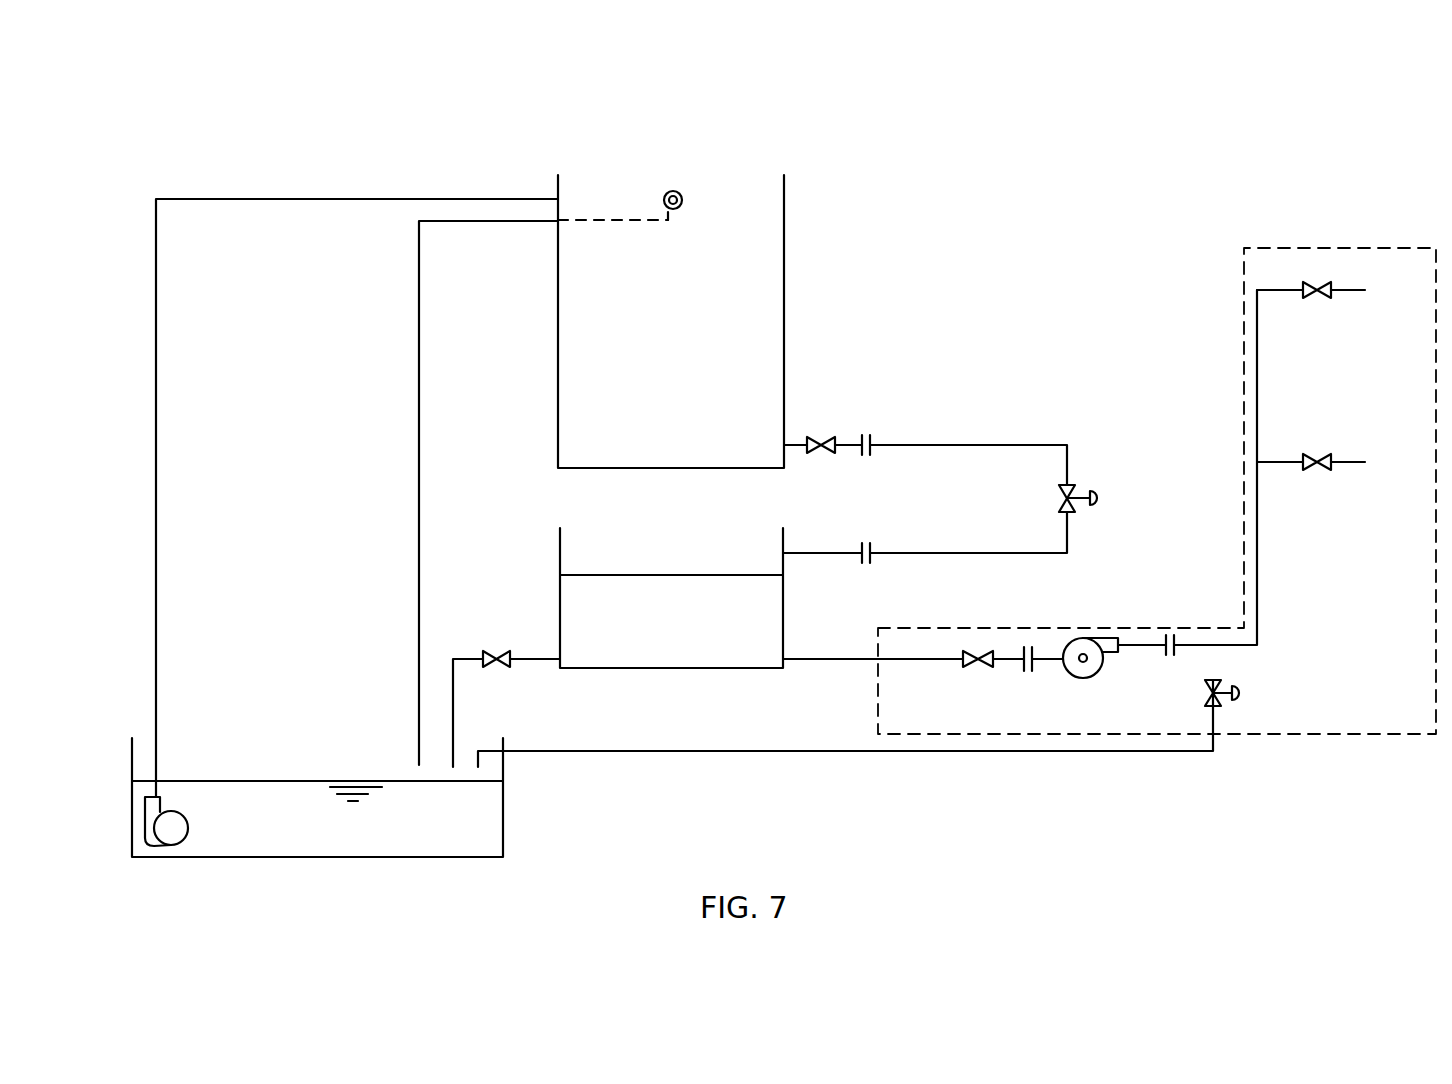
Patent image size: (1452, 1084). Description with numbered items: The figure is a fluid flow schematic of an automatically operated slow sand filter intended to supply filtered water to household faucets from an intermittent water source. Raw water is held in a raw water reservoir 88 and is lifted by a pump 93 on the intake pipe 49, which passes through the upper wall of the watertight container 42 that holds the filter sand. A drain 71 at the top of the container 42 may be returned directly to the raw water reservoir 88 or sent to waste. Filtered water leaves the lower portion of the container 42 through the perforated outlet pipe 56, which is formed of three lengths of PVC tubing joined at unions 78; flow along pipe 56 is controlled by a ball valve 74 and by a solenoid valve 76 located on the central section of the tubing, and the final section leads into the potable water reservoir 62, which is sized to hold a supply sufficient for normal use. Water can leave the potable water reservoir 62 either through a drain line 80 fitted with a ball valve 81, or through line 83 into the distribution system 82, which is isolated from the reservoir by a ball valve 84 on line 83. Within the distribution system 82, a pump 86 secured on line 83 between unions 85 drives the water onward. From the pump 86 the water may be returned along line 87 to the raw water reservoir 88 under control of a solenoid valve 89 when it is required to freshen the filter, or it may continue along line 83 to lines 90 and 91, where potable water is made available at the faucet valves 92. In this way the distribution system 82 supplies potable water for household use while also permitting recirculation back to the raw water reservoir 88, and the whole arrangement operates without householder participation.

The watertight container 42 is at (784, 290).
The pipe 49 is at (400, 197).
The perforated pipe 56 is at (792, 440).
The potable water reservoir 62 is at (784, 602).
The drain 71 is at (640, 222).
The ball valve 74 is at (820, 455).
The solenoid valve 76 is at (1075, 484).
The unions 78 is at (868, 436).
The drain line 80 is at (457, 657).
The ball valve 81 is at (497, 648).
The distribution system 82 is at (1155, 749).
The line 83 is at (1013, 664).
The ball valve 84 is at (965, 668).
The unions 85 is at (1031, 646).
The pump 86 is at (1087, 638).
The line 87 is at (880, 752).
The raw water reservoir 88 is at (503, 815).
The solenoid valve 89 is at (1228, 690).
The line 90 is at (1280, 292).
The line 91 is at (1275, 461).
The valves 92 is at (1320, 298).
The pump 93 is at (172, 849).